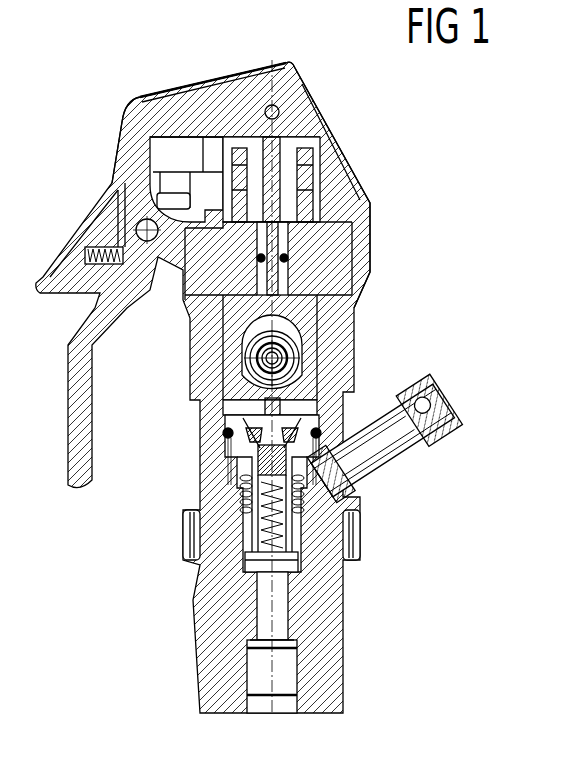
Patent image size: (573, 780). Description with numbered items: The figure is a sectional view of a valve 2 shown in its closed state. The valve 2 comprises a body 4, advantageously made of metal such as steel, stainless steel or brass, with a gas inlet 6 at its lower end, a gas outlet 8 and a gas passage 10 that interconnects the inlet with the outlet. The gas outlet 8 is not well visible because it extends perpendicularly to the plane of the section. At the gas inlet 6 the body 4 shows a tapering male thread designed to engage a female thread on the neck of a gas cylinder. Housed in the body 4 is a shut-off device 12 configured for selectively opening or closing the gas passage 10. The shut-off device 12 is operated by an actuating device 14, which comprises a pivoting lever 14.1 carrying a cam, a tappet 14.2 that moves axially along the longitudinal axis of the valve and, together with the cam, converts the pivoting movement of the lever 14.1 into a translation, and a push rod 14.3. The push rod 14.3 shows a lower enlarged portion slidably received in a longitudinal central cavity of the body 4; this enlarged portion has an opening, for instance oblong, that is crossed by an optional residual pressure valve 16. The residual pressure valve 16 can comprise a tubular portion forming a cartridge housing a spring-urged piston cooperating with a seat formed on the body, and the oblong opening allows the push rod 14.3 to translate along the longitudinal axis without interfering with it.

The valve 2 is at (436, 130).
The body 4 is at (330, 532).
The gas inlet 6 is at (278, 680).
The gas outlet 8 is at (252, 360).
The gas passage 10 is at (280, 600).
The shut-off device 12 is at (178, 469).
The actuating device 14 is at (404, 256).
The pivoting lever 14.1 is at (158, 120).
The tappet 14.2 is at (320, 158).
The push rod 14.3 is at (313, 357).
The residual pressure valve 16 is at (312, 340).